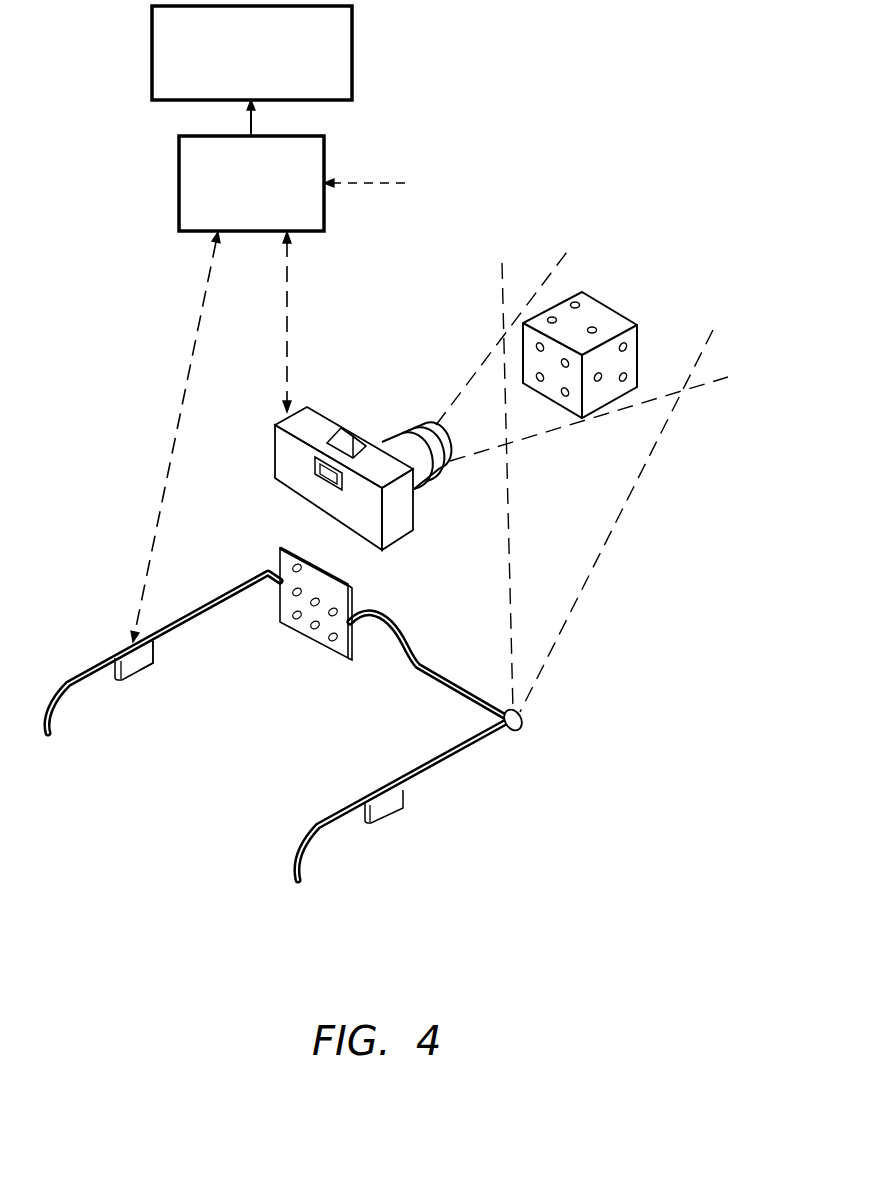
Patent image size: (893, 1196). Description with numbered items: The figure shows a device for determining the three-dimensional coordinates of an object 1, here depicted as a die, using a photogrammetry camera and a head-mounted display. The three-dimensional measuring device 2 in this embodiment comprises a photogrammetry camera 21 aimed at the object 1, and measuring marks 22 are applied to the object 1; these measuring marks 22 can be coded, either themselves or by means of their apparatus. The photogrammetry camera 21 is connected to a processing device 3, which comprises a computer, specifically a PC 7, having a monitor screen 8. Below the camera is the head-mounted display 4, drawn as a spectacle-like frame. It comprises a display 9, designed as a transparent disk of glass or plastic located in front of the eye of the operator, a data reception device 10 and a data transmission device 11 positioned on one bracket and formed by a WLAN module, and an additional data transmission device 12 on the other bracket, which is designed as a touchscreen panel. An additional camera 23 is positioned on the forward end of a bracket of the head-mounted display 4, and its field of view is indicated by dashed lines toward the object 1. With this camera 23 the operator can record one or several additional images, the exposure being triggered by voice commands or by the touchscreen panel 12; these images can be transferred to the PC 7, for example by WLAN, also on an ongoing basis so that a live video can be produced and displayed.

The object 1 is at (567, 403).
The 3D measuring device 2 is at (389, 395).
The processing device 3 is at (394, 100).
The head-mounted display 4 is at (307, 725).
The PC 7 is at (324, 160).
The monitor screen 8 is at (352, 55).
The display 9 is at (340, 645).
The data reception device 10 is at (130, 668).
The data transmission device 11 is at (145, 658).
The additional data transmission device 12 is at (385, 810).
The photogrammetry camera 21 is at (295, 482).
The measuring marks 22 is at (592, 330).
The additional camera 23 is at (523, 727).